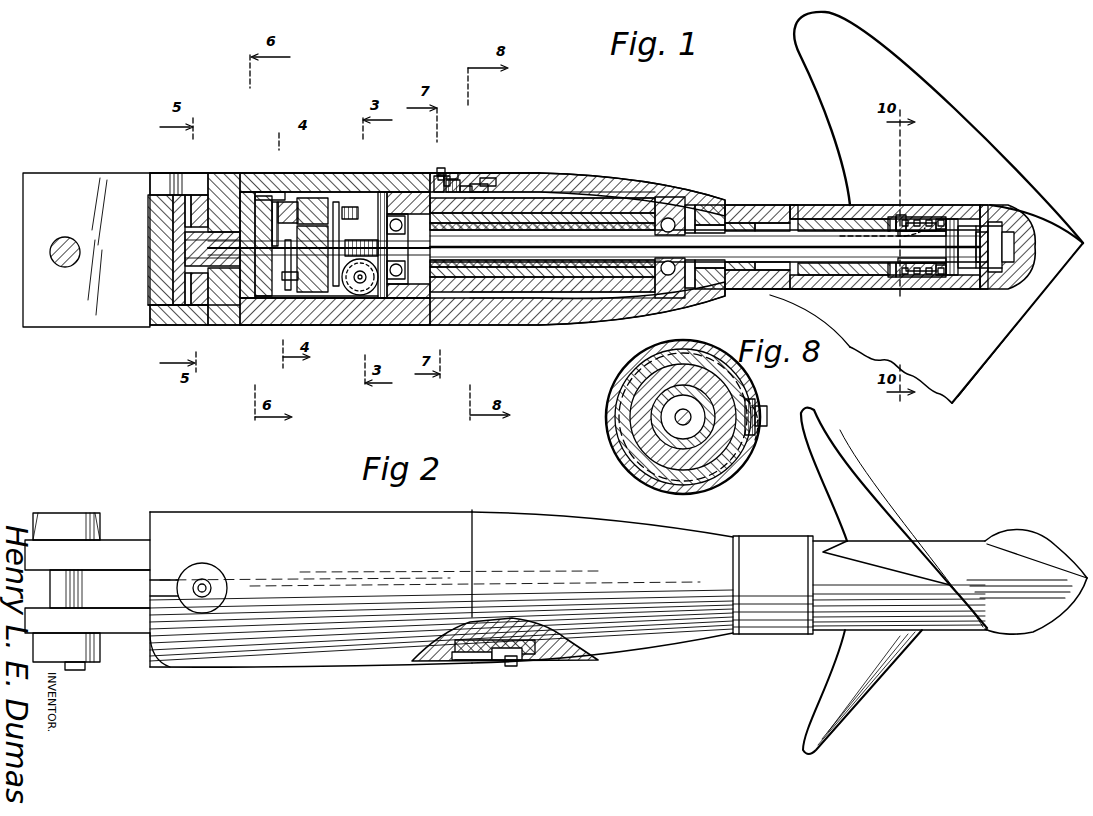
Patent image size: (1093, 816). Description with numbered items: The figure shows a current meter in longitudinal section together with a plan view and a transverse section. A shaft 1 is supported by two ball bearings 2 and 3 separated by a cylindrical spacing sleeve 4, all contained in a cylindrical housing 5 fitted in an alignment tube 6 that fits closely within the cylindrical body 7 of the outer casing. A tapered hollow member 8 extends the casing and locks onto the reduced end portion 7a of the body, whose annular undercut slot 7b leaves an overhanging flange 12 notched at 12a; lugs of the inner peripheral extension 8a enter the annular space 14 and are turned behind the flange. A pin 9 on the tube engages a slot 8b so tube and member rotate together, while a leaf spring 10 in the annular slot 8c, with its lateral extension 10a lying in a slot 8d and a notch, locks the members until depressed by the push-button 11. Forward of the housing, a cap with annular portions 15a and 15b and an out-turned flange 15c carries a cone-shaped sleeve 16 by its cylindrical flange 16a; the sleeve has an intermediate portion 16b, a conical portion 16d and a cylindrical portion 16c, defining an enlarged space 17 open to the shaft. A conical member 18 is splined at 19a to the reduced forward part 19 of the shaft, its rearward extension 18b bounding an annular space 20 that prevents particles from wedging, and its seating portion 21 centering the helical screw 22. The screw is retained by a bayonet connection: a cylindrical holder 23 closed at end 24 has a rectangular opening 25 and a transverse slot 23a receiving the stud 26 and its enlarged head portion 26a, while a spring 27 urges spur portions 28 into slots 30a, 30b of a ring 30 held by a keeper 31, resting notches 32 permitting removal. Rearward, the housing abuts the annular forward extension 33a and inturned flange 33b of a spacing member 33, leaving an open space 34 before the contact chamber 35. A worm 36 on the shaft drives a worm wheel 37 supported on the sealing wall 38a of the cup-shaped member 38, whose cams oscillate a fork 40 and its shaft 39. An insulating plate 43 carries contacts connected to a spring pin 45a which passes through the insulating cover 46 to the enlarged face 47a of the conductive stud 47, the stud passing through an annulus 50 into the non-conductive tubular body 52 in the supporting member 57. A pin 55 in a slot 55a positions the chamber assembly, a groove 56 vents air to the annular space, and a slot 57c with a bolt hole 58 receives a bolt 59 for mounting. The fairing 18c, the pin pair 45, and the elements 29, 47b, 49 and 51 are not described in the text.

In FIG. 1, the shaft 1 is at (705, 246).
In FIG. 8, the shaft 1 is at (674, 419).
In FIG. 1, the ball bearing 2 is at (640, 262).
In FIG. 1, the ball bearing 3 is at (392, 245).
In FIG. 1, the cylindrical spacing sleeve 4 is at (628, 222).
In FIG. 8, the cylindrical spacing sleeve 4 is at (652, 409).
In FIG. 1, the cylindrical housing 5 is at (612, 212).
In FIG. 8, the cylindrical housing 5 is at (646, 430).
In FIG. 1, the cylindrical alignment tube 6 is at (592, 200).
In FIG. 8, the cylindrical alignment tube 6 is at (630, 447).
In FIG. 1, the cylindrical body 7 is at (327, 322).
In FIG. 2, the cylindrical body 7 is at (302, 515).
In FIG. 1, the reduced end portion 7a is at (450, 178).
In FIG. 1, the annular undercut slot 7b is at (444, 176).
In FIG. 1, the tapered hollow member 8 is at (572, 182).
In FIG. 8, the tapered hollow member 8 is at (628, 371).
In FIG. 2, the tapered hollow member 8 is at (505, 515).
In FIG. 1, the inner peripheral extension 8a is at (494, 182).
In FIG. 1, the slot 8b is at (455, 175).
In FIG. 1, the annular slot 8c is at (522, 183).
In FIG. 2, the annular slot 8c is at (500, 662).
In FIG. 8, the slot 8d is at (758, 430).
In FIG. 2, the slot 8d is at (482, 636).
In FIG. 1, the pin 9 is at (468, 186).
In FIG. 1, the leaf spring 10 is at (512, 193).
In FIG. 8, the leaf spring 10 is at (632, 386).
In FIG. 8, the lateral extension 10a is at (756, 403).
In FIG. 2, the lateral extension 10a is at (462, 662).
In FIG. 8, the push-button 11 is at (768, 412).
In FIG. 2, the push-button 11 is at (515, 667).
In FIG. 1, the overhanging flange 12 is at (462, 186).
In FIG. 2, the notch 12a is at (474, 664).
In FIG. 1, the annular space 14 is at (437, 176).
In FIG. 1, the annular portion 15a is at (674, 210).
In FIG. 1, the annular portion 15b is at (712, 208).
In FIG. 1, the out-turned flange 15c is at (664, 200).
In FIG. 1, the cone-shaped sleeve 16 is at (742, 206).
In FIG. 1, the cylindrical flange 16a is at (704, 206).
In FIG. 1, the intermediate cylindrical portion 16b is at (708, 214).
In FIG. 1, the cylindrical portion 16c is at (772, 290).
In FIG. 1, the conical portion 16d is at (790, 206).
In FIG. 1, the enlarged space 17 is at (736, 290).
In FIG. 1, the conical member 18 is at (852, 224).
In FIG. 2, the conical member 18 is at (762, 540).
In FIG. 1, the rearward extension 18b is at (758, 290).
In FIG. 1, the tail fairing 18c is at (843, 296).
In FIG. 1, the reduced forward part 19 is at (842, 222).
In FIG. 1, the spline connection 19a is at (890, 220).
In FIG. 1, the annular space 20 is at (818, 290).
In FIG. 1, the seating portion 21 is at (812, 206).
In FIG. 1, the helical screw 22 is at (976, 120).
In FIG. 2, the helical screw 22 is at (872, 502).
In FIG. 1, the cylindrical holder 23 is at (970, 232).
In FIG. 1, the transverse slot 23a is at (1000, 232).
In FIG. 1, the closed end 24 is at (990, 245).
In FIG. 1, the rectangular opening 25 is at (985, 278).
In FIG. 1, the stud 26 is at (946, 272).
In FIG. 1, the enlarged head portion 26a is at (1003, 226).
In FIG. 1, the spring 27 is at (958, 272).
In FIG. 1, the spur portions 28 is at (906, 219).
In FIG. 1, the spring sleeve 29 is at (906, 272).
In FIG. 1, the ring 30 is at (922, 272).
In FIG. 1, the slot 30a is at (940, 216).
In FIG. 1, the slot 30b is at (914, 278).
In FIG. 1, the keeper 31 is at (892, 270).
In FIG. 1, the resting notches 32 is at (918, 226).
In FIG. 1, the removable spacing member 33 is at (420, 188).
In FIG. 1, the annular forward extension 33a is at (415, 300).
In FIG. 1, the inturned flange 33b is at (424, 180).
In FIG. 1, the open space 34 is at (358, 214).
In FIG. 1, the contact chamber 35 is at (282, 305).
In FIG. 1, the worm 36 is at (368, 294).
In FIG. 1, the worm wheel 37 is at (356, 262).
In FIG. 1, the cup-shaped removable member 38 is at (262, 305).
In FIG. 1, the sealing wall 38a is at (305, 300).
In FIG. 1, the shaft 39 is at (312, 198).
In FIG. 1, the fork 40 is at (338, 202).
In FIG. 1, the insulating plate 43 is at (287, 300).
In FIG. 1, the piston housing 45 is at (290, 205).
In FIG. 1, the spring pin 45a is at (252, 192).
In FIG. 1, the insulating cover 46 is at (226, 190).
In FIG. 1, the stud 47 is at (178, 250).
In FIG. 1, the enlarged face 47a is at (232, 308).
In FIG. 1, the piston 47b is at (183, 240).
In FIG. 1, the base plate 49 is at (216, 306).
In FIG. 1, the annulus 50 is at (195, 302).
In FIG. 1, the packing ring 51 is at (172, 302).
In FIG. 1, the non-conductive tubular body 52 is at (184, 302).
In FIG. 1, the pin 55 is at (276, 200).
In FIG. 1, the slot 55a is at (290, 200).
In FIG. 1, the groove 56 is at (383, 192).
In FIG. 1, the supporting member 57 is at (80, 180).
In FIG. 2, the slot 57c is at (118, 575).
In FIG. 1, the bolt hole 58 is at (62, 238).
In FIG. 2, the bolt hole 58 is at (72, 595).
In FIG. 2, the bolt 59 is at (104, 647).